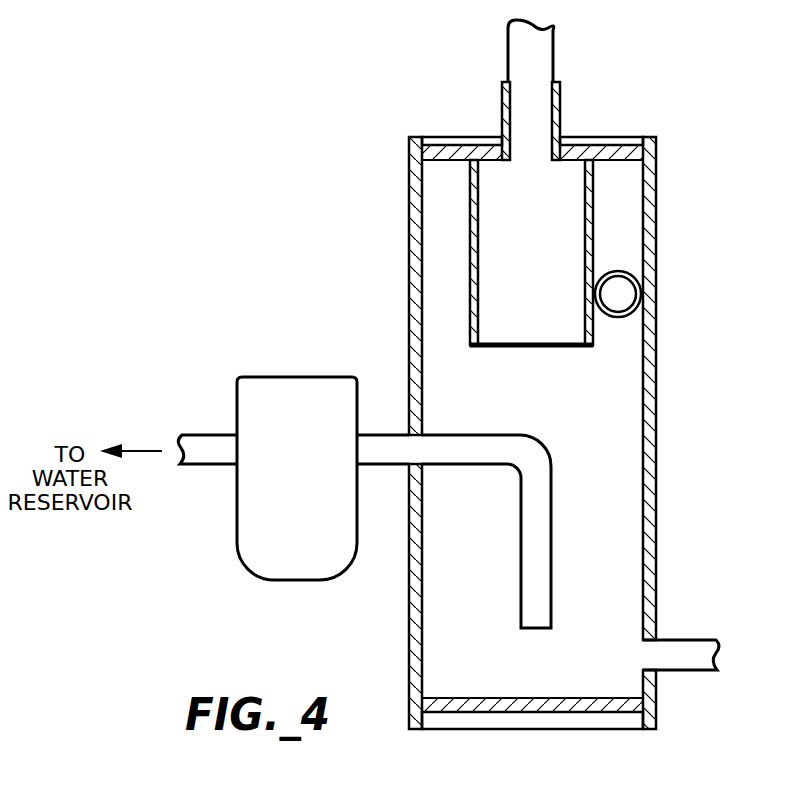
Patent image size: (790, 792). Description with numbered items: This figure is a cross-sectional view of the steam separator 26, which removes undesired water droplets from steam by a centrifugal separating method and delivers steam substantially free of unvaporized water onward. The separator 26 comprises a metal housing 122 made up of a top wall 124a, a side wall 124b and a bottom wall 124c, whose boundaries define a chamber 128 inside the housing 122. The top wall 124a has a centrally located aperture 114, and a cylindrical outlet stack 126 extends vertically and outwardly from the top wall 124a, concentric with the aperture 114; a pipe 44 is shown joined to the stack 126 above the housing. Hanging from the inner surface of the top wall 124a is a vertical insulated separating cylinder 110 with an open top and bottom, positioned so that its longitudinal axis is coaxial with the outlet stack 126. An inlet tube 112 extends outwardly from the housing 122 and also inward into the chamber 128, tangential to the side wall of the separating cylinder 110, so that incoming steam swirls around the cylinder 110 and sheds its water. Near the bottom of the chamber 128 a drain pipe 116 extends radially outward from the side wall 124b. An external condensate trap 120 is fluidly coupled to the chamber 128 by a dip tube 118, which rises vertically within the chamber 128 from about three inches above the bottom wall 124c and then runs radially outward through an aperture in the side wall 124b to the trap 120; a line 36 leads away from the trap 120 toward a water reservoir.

The steam separator 26 is at (688, 139).
The inlet pipe 44 is at (522, 65).
The aperture 114 is at (537, 112).
The outlet stack 126 is at (562, 123).
The top wall 124a is at (448, 152).
The side wall 124b is at (415, 278).
The bottom wall 124c is at (600, 703).
The metal housing 122 is at (650, 490).
The separating cylinder 110 is at (593, 233).
The inlet tube 112 is at (623, 298).
The chamber 128 is at (552, 398).
The dip tube 118 is at (530, 455).
The drain line to water reservoir 36 is at (218, 443).
The external condensate trap 120 is at (278, 375).
The drain pipe 116 is at (673, 638).